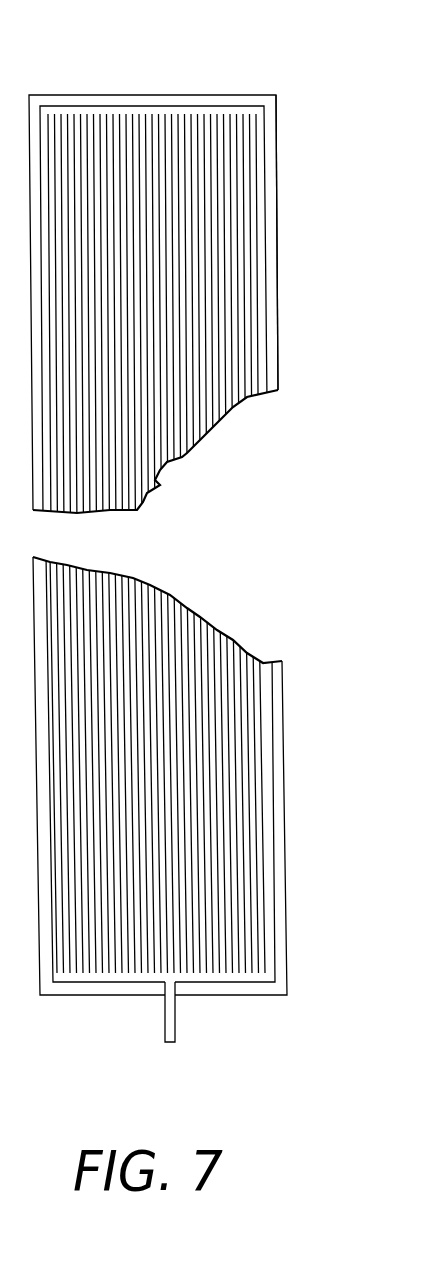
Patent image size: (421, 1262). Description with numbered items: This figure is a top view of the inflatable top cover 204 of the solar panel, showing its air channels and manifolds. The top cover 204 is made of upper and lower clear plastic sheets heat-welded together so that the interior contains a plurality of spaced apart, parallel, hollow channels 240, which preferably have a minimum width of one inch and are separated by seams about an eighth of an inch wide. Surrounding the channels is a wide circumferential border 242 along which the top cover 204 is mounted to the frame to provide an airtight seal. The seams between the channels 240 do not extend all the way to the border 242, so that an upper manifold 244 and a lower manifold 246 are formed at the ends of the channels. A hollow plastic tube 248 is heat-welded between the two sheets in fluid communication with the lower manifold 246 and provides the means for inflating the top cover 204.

The top cover 204 is at (283, 165).
The upper manifold 244 is at (160, 100).
The circumferential border 242 is at (273, 345).
The hollow channels 240 is at (177, 453).
The lower manifold 246 is at (243, 970).
The hollow plastic tube 248 is at (165, 1015).